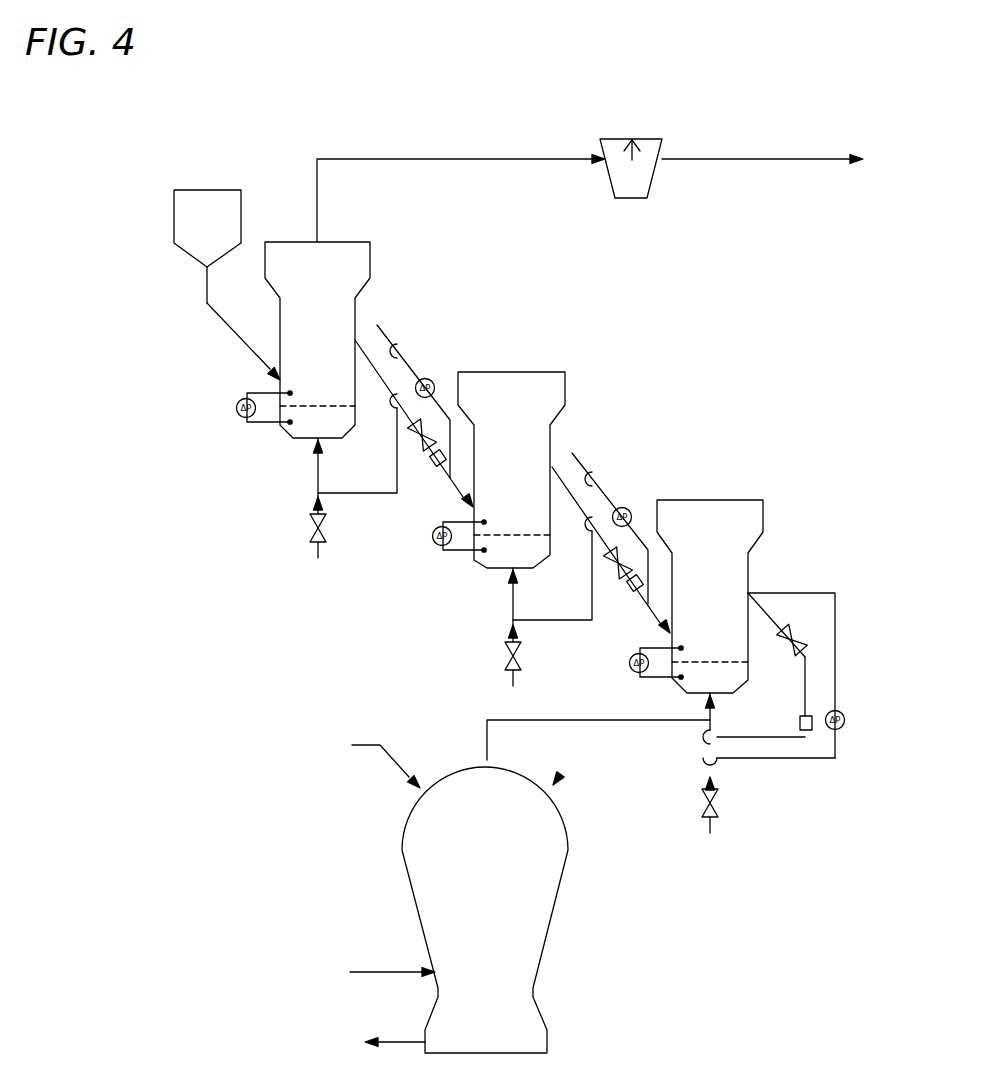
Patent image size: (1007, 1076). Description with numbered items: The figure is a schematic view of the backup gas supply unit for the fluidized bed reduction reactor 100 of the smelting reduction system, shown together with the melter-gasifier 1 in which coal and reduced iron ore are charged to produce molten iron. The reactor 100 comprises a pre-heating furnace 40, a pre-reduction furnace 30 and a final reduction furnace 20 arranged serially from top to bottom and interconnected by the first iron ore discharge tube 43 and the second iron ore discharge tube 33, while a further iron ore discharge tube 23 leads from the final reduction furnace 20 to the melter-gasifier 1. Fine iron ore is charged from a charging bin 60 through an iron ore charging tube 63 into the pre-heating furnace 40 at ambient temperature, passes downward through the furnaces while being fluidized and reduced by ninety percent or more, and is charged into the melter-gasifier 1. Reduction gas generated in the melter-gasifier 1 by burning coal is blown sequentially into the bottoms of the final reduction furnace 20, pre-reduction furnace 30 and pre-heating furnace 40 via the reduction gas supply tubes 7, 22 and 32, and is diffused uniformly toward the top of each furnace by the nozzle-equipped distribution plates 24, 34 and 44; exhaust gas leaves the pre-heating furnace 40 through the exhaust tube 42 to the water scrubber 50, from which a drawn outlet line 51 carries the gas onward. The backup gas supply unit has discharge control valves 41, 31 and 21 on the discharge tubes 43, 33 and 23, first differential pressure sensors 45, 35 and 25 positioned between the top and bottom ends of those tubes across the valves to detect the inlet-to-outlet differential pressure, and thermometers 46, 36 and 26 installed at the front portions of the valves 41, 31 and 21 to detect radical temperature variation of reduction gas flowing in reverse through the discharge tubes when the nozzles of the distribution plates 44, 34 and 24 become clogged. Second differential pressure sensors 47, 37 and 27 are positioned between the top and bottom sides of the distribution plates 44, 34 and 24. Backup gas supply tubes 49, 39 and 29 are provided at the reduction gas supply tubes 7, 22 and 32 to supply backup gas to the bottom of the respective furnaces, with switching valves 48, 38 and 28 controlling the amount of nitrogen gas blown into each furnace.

The melter-gasifier 1 is at (588, 915).
The reduction gas supply tube 7 is at (585, 726).
The final reduction furnace 20 is at (733, 593).
The discharge control valve 21 is at (793, 673).
The reduction gas supply tube 22 is at (599, 518).
The iron ore discharge tube 23 is at (690, 731).
The distribution plate 24 is at (710, 639).
The first differential pressure sensor 25 is at (861, 709).
The thermometer 26 is at (780, 720).
The second differential pressure sensor 27 is at (632, 672).
The switching valve 28 is at (733, 805).
The backup gas supply tube 29 is at (688, 789).
The pre-reduction furnace 30 is at (535, 469).
The discharge control valve 31 is at (612, 566).
The reduction gas supply tube 32 is at (405, 392).
The second iron ore discharge tube 33 is at (610, 543).
The distribution plate 34 is at (512, 512).
The first differential pressure sensor 35 is at (634, 498).
The thermometer 36 is at (622, 608).
The second differential pressure sensor 37 is at (436, 547).
The switching valve 38 is at (536, 657).
The backup gas supply tube 39 is at (489, 686).
The pre-heating furnace 40 is at (343, 340).
The discharge control valve 41 is at (415, 438).
The exhaust tube 42 is at (461, 177).
The first iron ore discharge tube 43 is at (413, 416).
The distribution plate 44 is at (317, 384).
The first differential pressure sensor 45 is at (437, 368).
The thermometer 46 is at (425, 480).
The second differential pressure sensor 47 is at (242, 419).
The switching valve 48 is at (340, 531).
The backup gas supply tube 49 is at (294, 559).
The water scrubber 50 is at (640, 147).
The exhaust line 51 is at (762, 138).
The charging bin 60 is at (230, 246).
The iron ore charging tube 63 is at (241, 345).
The fluidized bed reduction reactor 100 is at (712, 356).